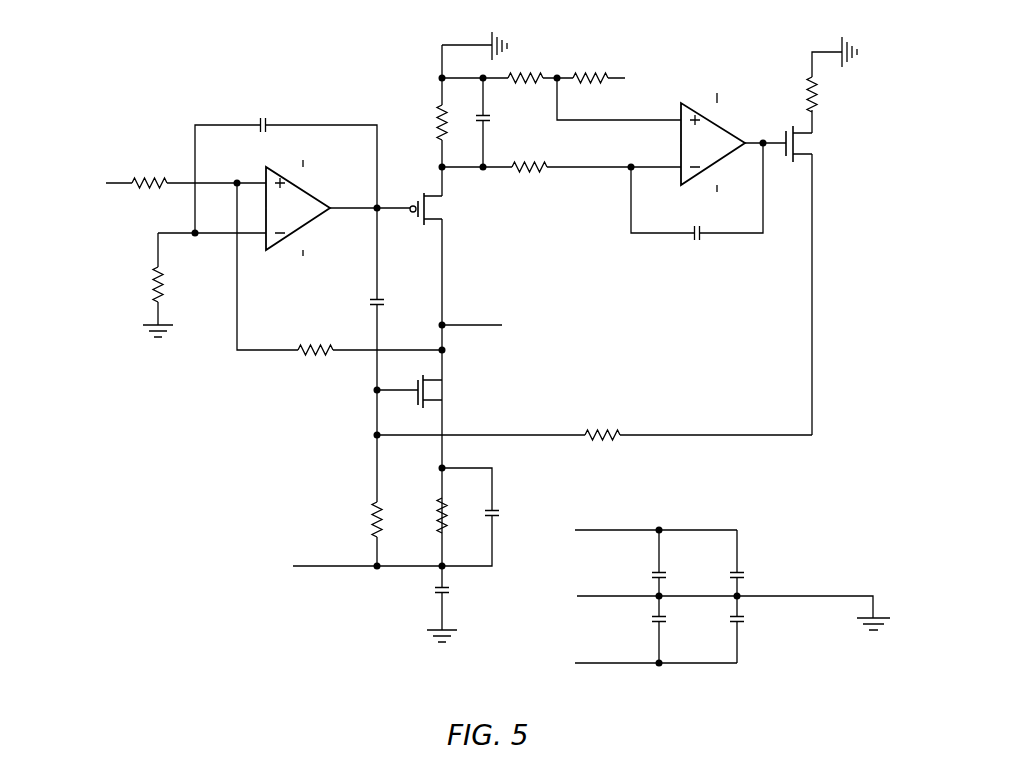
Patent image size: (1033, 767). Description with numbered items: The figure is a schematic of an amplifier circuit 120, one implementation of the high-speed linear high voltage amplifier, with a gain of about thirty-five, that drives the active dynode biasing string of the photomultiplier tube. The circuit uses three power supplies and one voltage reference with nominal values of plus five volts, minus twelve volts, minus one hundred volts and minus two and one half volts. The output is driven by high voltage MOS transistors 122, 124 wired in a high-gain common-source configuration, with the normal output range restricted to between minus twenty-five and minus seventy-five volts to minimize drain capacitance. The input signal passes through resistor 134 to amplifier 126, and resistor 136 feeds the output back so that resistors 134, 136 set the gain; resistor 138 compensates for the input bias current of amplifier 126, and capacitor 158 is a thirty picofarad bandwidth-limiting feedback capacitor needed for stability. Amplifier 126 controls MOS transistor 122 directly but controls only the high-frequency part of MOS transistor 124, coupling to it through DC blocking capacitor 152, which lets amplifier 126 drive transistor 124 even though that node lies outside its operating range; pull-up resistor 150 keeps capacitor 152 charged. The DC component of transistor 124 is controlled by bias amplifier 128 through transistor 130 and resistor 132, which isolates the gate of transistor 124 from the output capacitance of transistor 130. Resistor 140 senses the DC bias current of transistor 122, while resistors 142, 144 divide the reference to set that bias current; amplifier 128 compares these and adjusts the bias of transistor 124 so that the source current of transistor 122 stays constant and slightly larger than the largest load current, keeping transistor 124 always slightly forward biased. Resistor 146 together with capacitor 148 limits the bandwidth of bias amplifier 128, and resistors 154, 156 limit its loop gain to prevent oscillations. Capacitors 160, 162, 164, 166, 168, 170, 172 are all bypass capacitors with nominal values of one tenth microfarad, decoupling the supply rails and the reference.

The amplifier circuit 120 is at (264, 619).
The MOS transistor 122 is at (450, 210).
The MOS transistor 124 is at (447, 390).
The amplifier 126 is at (323, 198).
The bias amplifier 128 is at (738, 137).
The transistor 130 is at (808, 145).
The resistor 132 is at (602, 421).
The resistor 134 is at (150, 168).
The resistor 136 is at (318, 363).
The resistor 138 is at (143, 285).
The resistor 140 is at (430, 118).
The resistor 142 is at (523, 63).
The resistor 144 is at (590, 63).
The resistor 146 is at (530, 180).
The capacitor 148 is at (698, 250).
The resistor 150 is at (365, 522).
The capacitor 152 is at (367, 303).
The resistor 154 is at (430, 520).
The resistor 156 is at (827, 88).
The capacitor 158 is at (263, 113).
The capacitor 160 is at (497, 118).
The capacitor 162 is at (643, 575).
The capacitor 164 is at (752, 575).
The capacitor 166 is at (640, 620).
The capacitor 168 is at (753, 620).
The capacitor 170 is at (425, 590).
The capacitor 172 is at (507, 513).